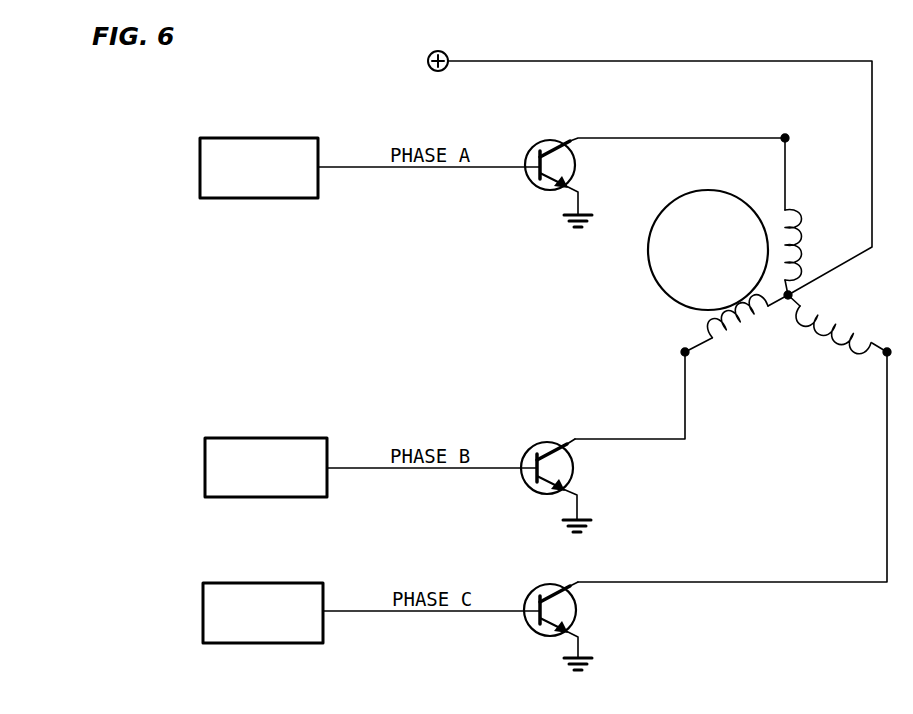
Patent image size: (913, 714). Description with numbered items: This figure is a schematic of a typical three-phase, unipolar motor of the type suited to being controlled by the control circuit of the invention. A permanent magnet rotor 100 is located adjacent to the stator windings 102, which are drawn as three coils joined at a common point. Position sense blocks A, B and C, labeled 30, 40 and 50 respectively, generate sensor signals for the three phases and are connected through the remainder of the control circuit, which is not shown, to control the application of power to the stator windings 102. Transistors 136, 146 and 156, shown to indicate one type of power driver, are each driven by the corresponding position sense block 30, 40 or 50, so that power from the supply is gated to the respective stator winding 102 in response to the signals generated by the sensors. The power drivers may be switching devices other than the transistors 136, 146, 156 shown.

The position sense block A 30 is at (232, 138).
The position sense block B 40 is at (243, 437).
The position sense block C 50 is at (240, 583).
The permanent magnet rotor 100 is at (707, 190).
The stator windings 102 is at (832, 294).
The transistor 136 is at (555, 141).
The transistor 146 is at (548, 443).
The transistor 156 is at (552, 585).